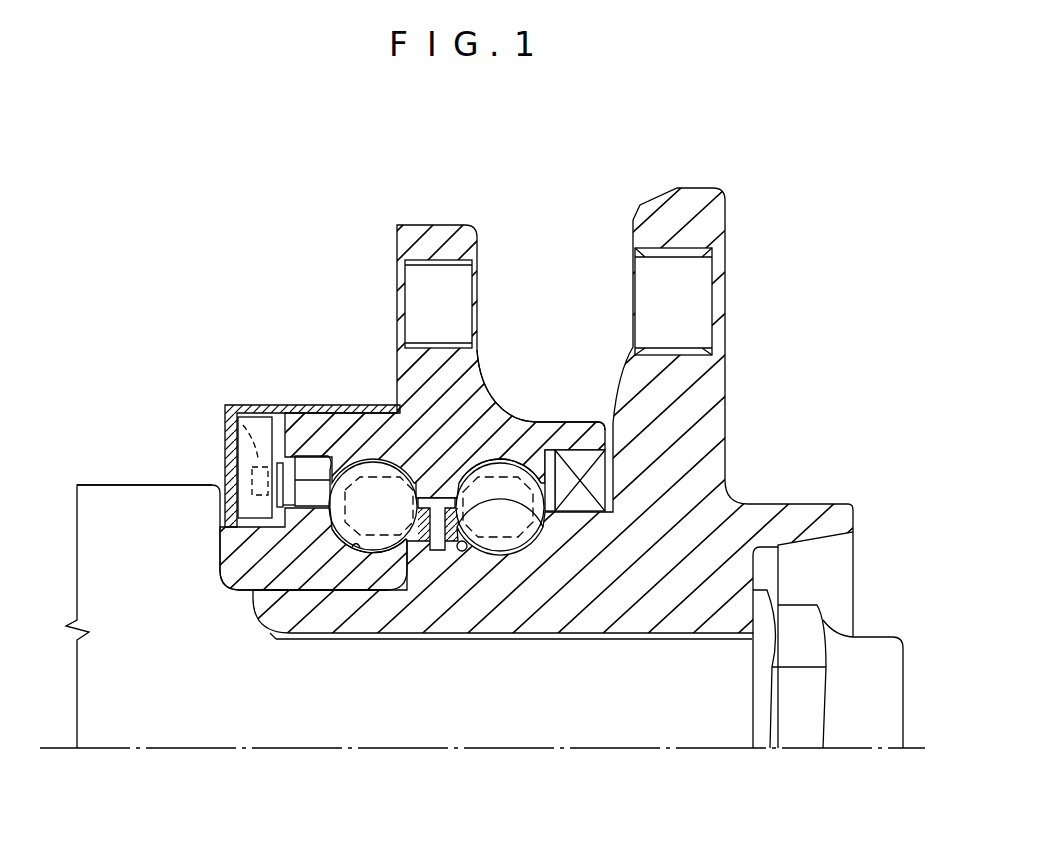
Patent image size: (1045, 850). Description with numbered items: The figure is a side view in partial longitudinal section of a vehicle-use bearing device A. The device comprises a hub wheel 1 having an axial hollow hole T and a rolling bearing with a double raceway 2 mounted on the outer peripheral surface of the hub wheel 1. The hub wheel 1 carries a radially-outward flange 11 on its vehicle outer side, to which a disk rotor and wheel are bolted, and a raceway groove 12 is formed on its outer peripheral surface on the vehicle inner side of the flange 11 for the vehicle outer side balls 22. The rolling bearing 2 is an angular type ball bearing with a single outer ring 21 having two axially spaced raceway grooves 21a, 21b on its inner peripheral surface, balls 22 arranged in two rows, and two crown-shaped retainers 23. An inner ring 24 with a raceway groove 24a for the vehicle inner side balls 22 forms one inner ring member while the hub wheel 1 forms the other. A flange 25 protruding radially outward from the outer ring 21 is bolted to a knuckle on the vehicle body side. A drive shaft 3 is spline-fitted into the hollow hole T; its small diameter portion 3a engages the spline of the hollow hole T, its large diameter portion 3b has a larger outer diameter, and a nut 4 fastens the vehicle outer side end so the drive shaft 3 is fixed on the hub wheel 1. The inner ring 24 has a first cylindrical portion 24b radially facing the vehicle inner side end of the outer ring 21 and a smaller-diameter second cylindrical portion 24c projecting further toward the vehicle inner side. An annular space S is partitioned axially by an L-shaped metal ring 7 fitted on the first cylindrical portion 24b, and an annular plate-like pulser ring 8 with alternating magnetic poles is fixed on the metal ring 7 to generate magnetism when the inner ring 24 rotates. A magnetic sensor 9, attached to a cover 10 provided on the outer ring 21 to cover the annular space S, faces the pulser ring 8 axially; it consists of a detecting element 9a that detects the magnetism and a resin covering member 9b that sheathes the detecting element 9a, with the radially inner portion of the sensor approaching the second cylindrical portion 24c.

The vehicle-use bearing device A is at (577, 212).
The hub wheel 1 is at (555, 425).
The rolling bearing with a double raceway 2 is at (445, 425).
The drive shaft 3 is at (482, 601).
The small diameter portion 3a is at (577, 731).
The large diameter portion 3b is at (157, 505).
The nut 4 is at (877, 655).
The metal ring 7 is at (303, 432).
The pulser ring 8 is at (292, 432).
The magnetic sensor 9 is at (206, 437).
The detecting element 9a is at (227, 410).
The covering member 9b is at (218, 455).
The cover 10 is at (270, 427).
The radially-outward flange 11 is at (715, 196).
The raceway groove 12 is at (462, 552).
The outer ring 21 is at (445, 425).
The raceway groove 21a is at (524, 413).
The raceway groove 21b is at (478, 398).
The balls 22 is at (524, 534).
The crown-shaped retainer 23 is at (438, 551).
The inner ring 24 is at (266, 559).
The raceway groove 24a is at (357, 548).
The first cylindrical portion 24b is at (292, 572).
The second cylindrical portion 24c is at (232, 573).
The flange 25 is at (467, 236).
The annular space S is at (278, 417).
The axial hollow hole T is at (628, 637).